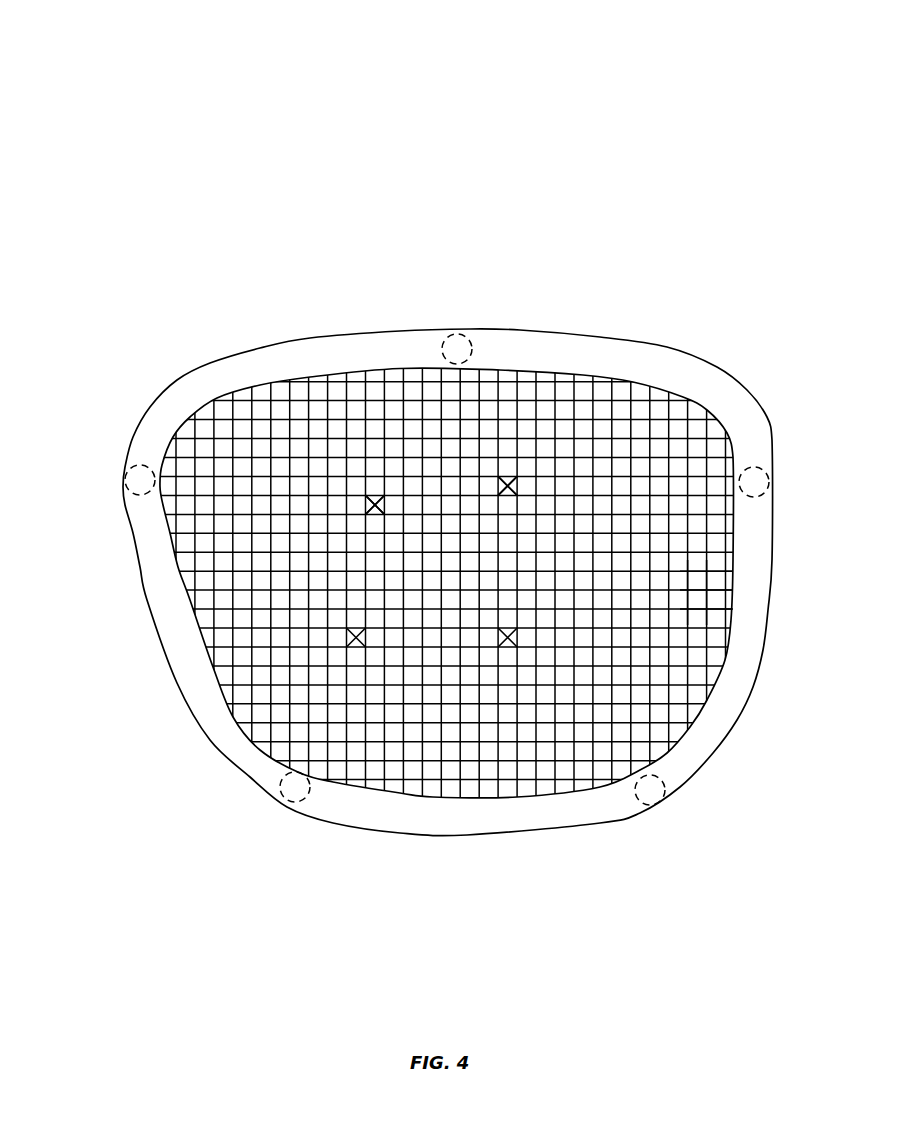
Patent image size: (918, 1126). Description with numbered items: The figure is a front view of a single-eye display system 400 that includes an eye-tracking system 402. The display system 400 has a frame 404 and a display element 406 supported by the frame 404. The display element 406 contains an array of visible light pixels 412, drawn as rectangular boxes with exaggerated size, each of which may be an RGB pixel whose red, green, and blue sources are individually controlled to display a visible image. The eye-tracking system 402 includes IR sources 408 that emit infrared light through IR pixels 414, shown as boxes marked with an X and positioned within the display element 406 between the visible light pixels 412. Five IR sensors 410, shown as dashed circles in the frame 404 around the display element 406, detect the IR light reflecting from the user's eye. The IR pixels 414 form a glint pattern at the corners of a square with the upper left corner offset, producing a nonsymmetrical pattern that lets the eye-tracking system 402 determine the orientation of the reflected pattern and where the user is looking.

The display system 400 is at (126, 86).
The eye-tracking system 402 is at (376, 233).
The frame 404 is at (584, 343).
The display element 406 is at (228, 611).
The IR source 408 is at (500, 482).
The IR sensor 410 is at (442, 347).
The visible light pixel 412 is at (712, 618).
The IR pixel 414 is at (370, 499).